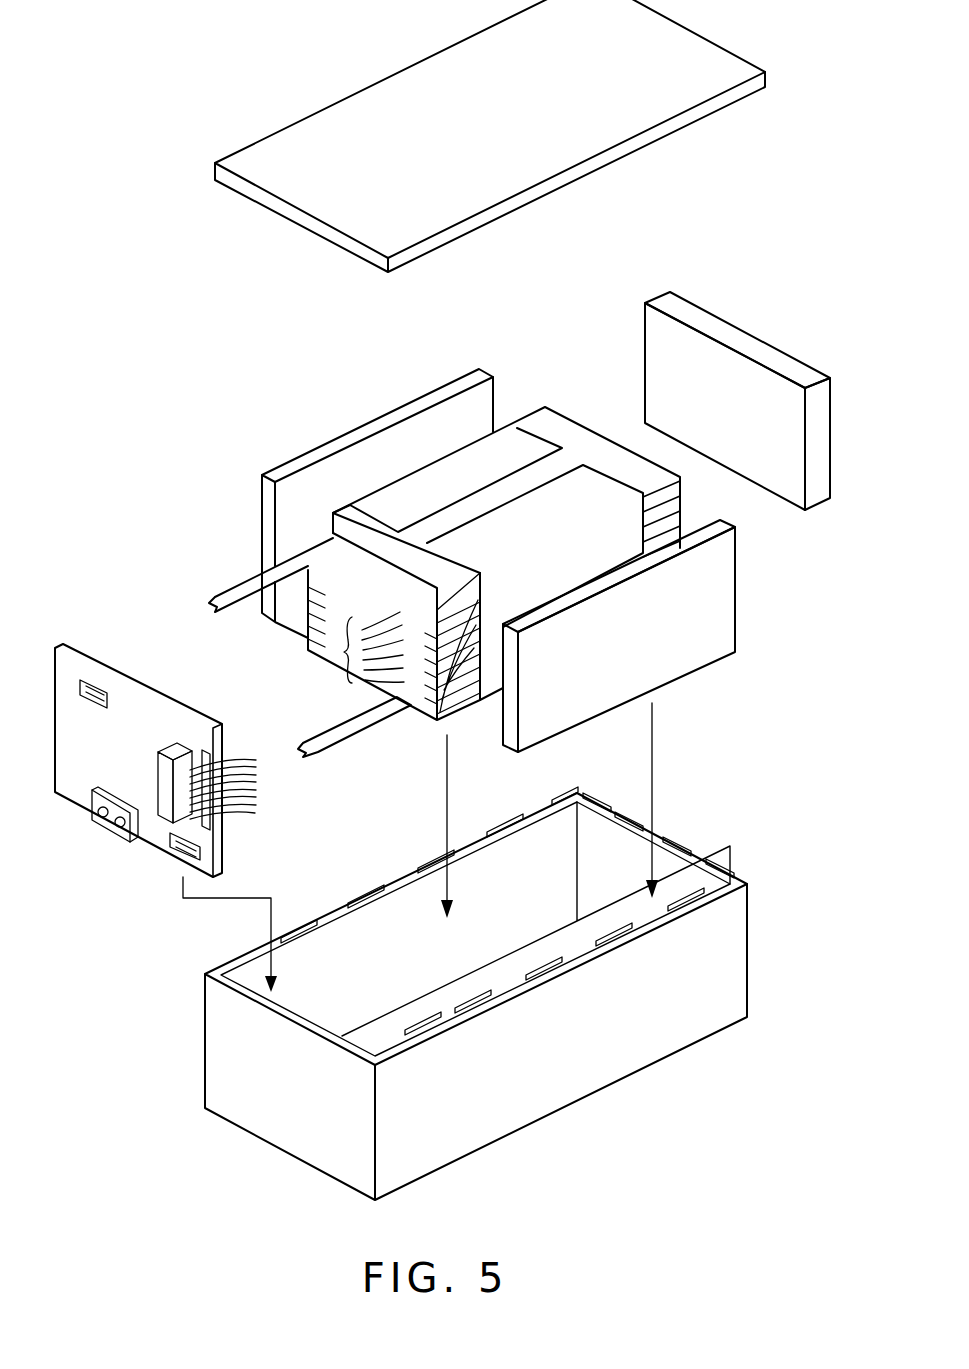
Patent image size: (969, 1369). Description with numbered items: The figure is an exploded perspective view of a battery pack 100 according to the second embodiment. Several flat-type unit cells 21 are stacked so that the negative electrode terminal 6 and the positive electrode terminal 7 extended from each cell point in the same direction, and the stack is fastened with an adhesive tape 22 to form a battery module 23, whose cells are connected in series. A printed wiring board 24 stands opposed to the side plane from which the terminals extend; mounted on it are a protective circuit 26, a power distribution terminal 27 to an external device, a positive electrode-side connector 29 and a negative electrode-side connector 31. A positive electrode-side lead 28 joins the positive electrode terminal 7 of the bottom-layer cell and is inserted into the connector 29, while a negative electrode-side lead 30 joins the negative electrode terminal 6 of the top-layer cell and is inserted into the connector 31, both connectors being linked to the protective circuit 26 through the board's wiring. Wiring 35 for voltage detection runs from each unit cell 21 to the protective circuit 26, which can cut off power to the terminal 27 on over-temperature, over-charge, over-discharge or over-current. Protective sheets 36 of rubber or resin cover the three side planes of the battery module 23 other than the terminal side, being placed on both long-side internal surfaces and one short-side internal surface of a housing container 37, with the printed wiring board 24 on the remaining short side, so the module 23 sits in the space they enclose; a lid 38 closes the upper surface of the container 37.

The battery pack 100 is at (126, 288).
The lid 38 is at (698, 60).
The protective sheet 36 is at (337, 448).
The battery module 23 is at (428, 458).
The adhesive tape 22 is at (578, 495).
The unit cell 21 is at (685, 528).
The negative electrode terminal 6 is at (325, 541).
The positive electrode terminal 7 is at (430, 578).
The negative electrode-side lead 30 is at (228, 590).
The positive electrode-side lead 28 is at (395, 737).
The wiring for voltage detection 35 is at (345, 650).
The printed wiring board 24 is at (94, 650).
The negative electrode-side connector 31 is at (102, 692).
The protective circuit 26 is at (177, 747).
The power distribution terminal 27 is at (120, 832).
The positive electrode-side connector 29 is at (200, 850).
The housing container 37 is at (735, 957).